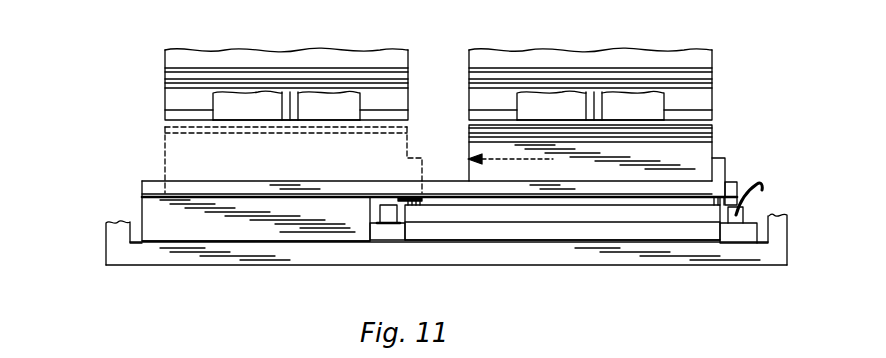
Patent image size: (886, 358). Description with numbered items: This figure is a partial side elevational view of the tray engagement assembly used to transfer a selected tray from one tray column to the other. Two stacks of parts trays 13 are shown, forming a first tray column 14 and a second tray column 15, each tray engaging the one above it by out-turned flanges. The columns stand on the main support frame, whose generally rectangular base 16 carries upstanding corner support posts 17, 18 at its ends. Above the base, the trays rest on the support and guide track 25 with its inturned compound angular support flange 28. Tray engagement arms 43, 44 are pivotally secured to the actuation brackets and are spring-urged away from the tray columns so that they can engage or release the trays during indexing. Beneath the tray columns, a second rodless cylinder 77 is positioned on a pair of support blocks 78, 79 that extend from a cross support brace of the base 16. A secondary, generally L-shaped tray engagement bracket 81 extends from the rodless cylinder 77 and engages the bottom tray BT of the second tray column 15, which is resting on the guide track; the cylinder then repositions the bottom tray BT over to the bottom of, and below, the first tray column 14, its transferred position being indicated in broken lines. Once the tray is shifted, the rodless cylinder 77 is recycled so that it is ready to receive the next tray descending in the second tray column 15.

The parts tray 13 is at (373, 62).
The first tray column 14 is at (165, 86).
The tray engagement arm 44 is at (223, 107).
The inturned compound angular support flange 28 is at (157, 188).
The support and guide track 25 is at (160, 217).
The upstanding corner support post 17 is at (117, 235).
The rectangular base 16 is at (266, 250).
The support block 79 is at (383, 232).
The second rodless cylinder 77 is at (505, 213).
The tray engagement arm 43 is at (652, 107).
The second tray column 15 is at (712, 88).
The bottom tray BT is at (700, 148).
The secondary L-shaped tray engagement bracket 81 is at (722, 173).
The support block 78 is at (755, 230).
The upstanding corner support post 18 is at (778, 237).